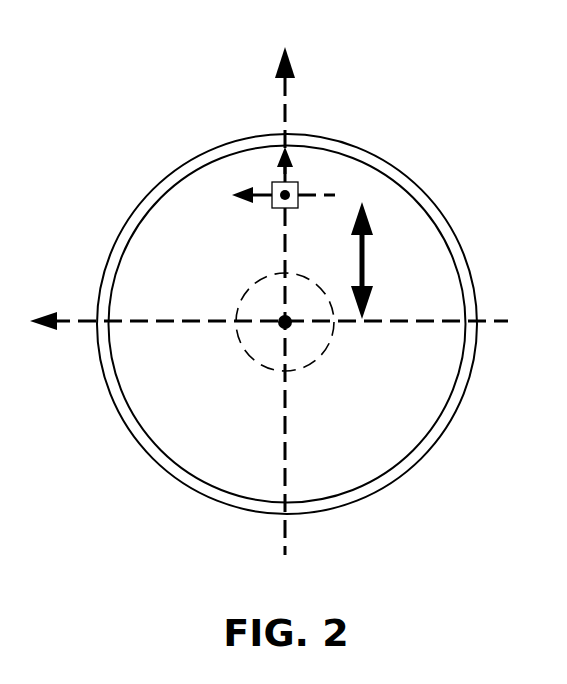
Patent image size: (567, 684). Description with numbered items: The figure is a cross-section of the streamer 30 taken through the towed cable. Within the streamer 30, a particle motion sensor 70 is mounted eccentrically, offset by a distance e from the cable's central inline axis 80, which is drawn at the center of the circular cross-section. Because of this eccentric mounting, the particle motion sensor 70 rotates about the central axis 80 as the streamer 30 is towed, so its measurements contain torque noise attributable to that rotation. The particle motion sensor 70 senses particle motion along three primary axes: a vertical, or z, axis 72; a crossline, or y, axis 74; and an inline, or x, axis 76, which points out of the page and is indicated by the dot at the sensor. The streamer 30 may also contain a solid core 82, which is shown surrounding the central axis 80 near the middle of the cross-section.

The streamer 30 is at (449, 206).
The particle motion sensor 70 is at (323, 147).
The vertical, or z, axis 72 is at (239, 132).
The crossline, or y, axis 74 is at (200, 150).
The inline, or x, axis 76 is at (381, 174).
The central axis 80 is at (267, 299).
The solid core 82 is at (196, 364).
The distance e is at (371, 260).